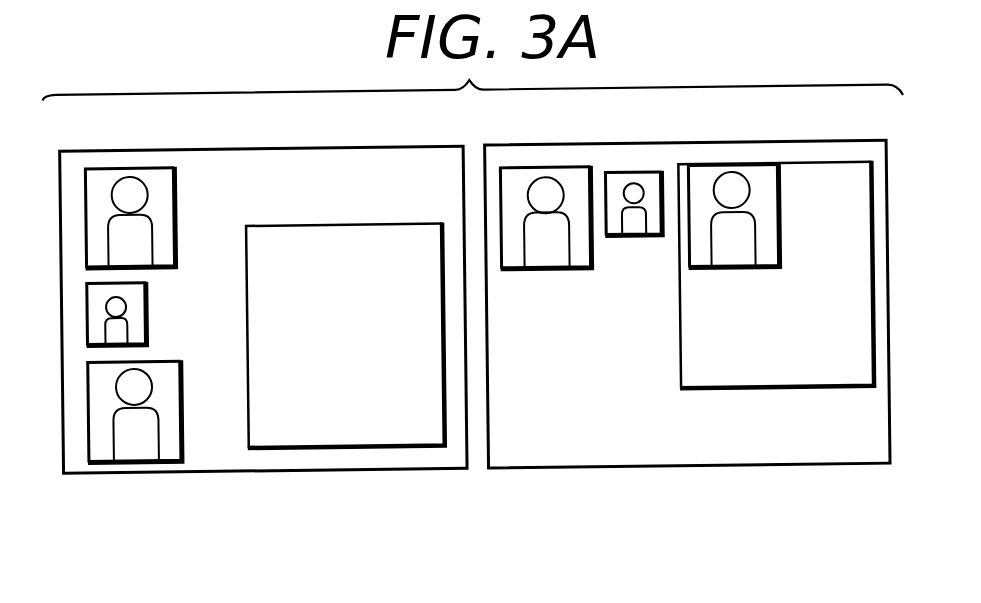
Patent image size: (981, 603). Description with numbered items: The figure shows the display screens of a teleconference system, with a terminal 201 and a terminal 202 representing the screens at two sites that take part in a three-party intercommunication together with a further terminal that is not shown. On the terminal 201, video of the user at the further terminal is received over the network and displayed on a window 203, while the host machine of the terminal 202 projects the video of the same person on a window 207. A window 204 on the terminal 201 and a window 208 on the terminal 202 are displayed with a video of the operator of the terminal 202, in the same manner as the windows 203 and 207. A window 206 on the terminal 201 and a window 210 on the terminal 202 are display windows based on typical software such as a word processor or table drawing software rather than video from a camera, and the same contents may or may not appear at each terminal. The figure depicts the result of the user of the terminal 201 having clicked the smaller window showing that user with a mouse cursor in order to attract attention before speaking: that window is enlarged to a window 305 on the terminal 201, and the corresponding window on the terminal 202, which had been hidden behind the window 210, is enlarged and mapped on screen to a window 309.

The terminal 201 is at (400, 146).
The terminal 202 is at (830, 141).
The window 203 is at (178, 196).
The window 204 is at (150, 316).
The window 305 is at (182, 388).
The window 206 is at (382, 222).
The window 207 is at (537, 269).
The window 208 is at (628, 237).
The window 309 is at (722, 270).
The window 210 is at (703, 390).